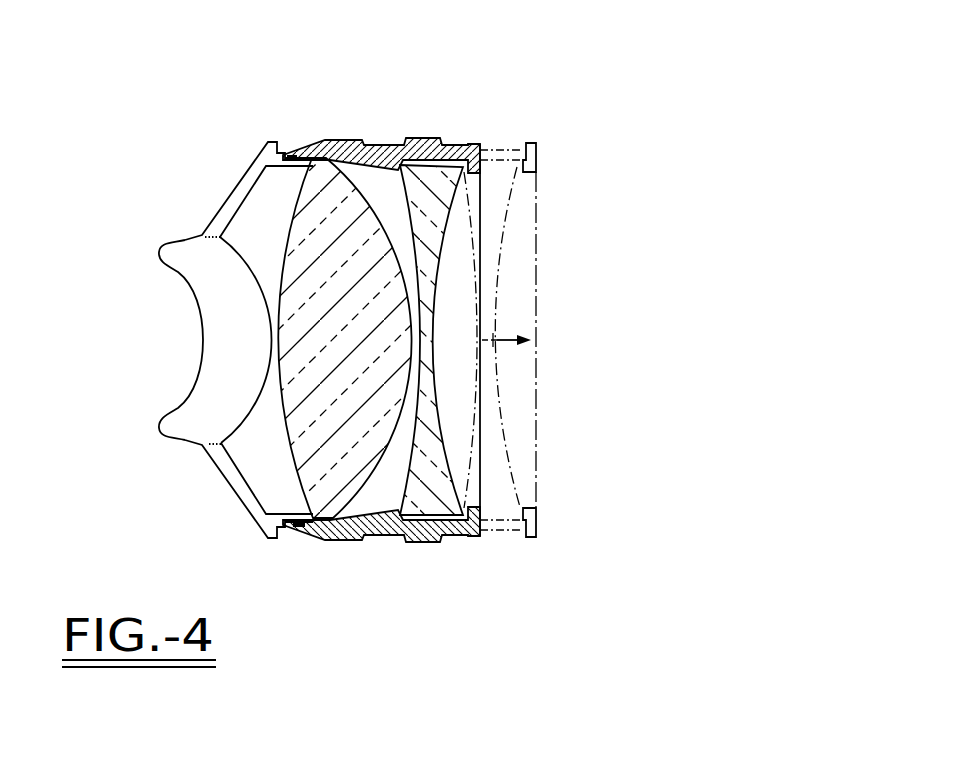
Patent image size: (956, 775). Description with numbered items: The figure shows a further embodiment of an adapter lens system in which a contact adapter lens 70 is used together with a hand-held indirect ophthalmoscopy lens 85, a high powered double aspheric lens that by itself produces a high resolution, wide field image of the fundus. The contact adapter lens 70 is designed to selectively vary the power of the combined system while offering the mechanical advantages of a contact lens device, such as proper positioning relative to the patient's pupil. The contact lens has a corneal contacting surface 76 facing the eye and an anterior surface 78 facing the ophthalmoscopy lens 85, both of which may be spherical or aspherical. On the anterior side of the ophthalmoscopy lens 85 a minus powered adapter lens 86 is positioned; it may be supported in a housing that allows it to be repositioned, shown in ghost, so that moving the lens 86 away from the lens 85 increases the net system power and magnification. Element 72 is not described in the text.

The contact adapter lens 70 is at (252, 140).
The eye lens element 72 is at (166, 377).
The corneal contacting surface 76 is at (188, 382).
The anterior surface 78 is at (254, 432).
The indirect ophthalmoscopy lens 85 is at (307, 480).
The minus powered adapter lens 86 is at (446, 170).